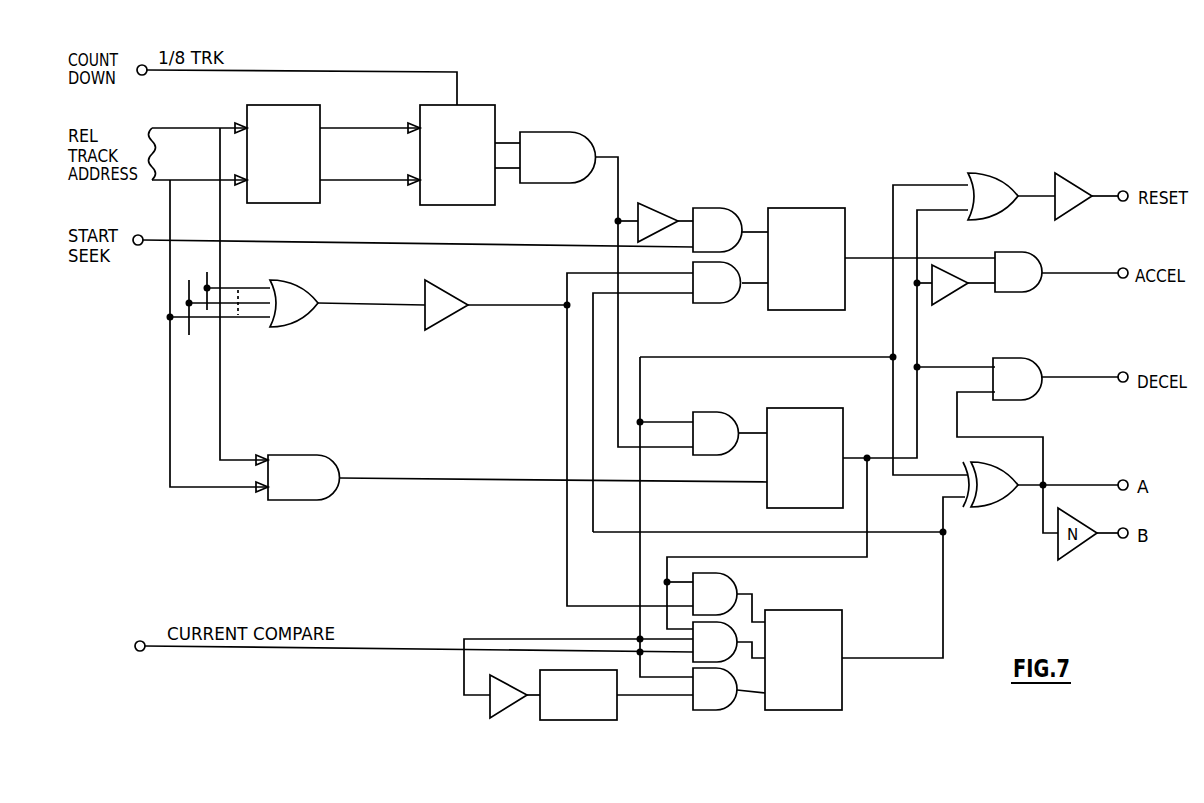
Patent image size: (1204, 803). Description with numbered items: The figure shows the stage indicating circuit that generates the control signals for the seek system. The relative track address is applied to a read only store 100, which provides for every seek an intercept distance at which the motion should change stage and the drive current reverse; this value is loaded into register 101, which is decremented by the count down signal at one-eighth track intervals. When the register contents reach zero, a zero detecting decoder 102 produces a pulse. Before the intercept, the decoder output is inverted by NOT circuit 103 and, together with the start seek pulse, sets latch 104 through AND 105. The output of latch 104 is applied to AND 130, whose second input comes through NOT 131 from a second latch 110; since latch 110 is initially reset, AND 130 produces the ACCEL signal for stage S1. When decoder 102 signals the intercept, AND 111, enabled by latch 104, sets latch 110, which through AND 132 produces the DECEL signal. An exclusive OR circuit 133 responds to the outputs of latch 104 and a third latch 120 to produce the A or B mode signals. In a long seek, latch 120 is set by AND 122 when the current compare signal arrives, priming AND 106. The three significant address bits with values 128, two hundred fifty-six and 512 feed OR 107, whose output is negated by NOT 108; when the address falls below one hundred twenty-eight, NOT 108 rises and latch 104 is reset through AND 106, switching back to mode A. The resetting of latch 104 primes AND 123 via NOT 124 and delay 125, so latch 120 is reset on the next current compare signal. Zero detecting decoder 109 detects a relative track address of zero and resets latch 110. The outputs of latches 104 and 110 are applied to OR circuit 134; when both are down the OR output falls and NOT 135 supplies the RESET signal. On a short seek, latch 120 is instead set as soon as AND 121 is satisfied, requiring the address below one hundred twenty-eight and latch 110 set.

The read only store 100 is at (280, 104).
The register 101 is at (473, 105).
The zero detecting decoder 102 is at (568, 132).
The NOT circuit 103 is at (647, 205).
The latch 104 is at (797, 208).
The AND 105 is at (717, 208).
The AND 106 is at (733, 302).
The OR 107 is at (298, 282).
The NOT 108 is at (450, 293).
The zero detecting decoder 109 is at (310, 455).
The latch 110 is at (798, 407).
The AND 111 is at (717, 412).
The latch 120 is at (805, 610).
The AND 121 is at (722, 575).
The AND 122 is at (727, 657).
The AND 123 is at (713, 710).
The NOT 124 is at (493, 720).
The delay 125 is at (593, 720).
The bit value 128 is at (237, 289).
The AND 130 is at (1023, 292).
The NOT 131 is at (947, 304).
The AND 132 is at (1023, 358).
The exclusive OR circuit 133 is at (983, 507).
The OR circuit 134 is at (985, 173).
The NOT 135 is at (1068, 173).
The bit value 512 is at (219, 315).